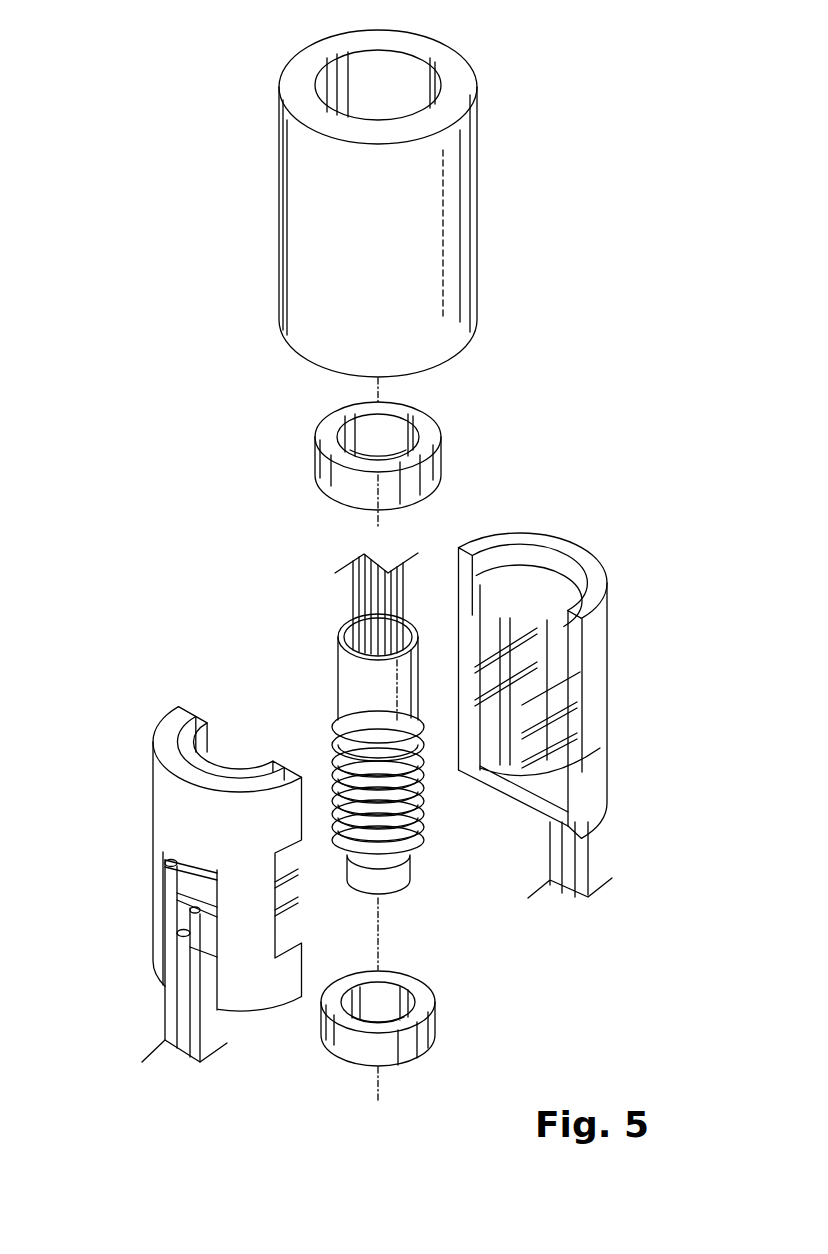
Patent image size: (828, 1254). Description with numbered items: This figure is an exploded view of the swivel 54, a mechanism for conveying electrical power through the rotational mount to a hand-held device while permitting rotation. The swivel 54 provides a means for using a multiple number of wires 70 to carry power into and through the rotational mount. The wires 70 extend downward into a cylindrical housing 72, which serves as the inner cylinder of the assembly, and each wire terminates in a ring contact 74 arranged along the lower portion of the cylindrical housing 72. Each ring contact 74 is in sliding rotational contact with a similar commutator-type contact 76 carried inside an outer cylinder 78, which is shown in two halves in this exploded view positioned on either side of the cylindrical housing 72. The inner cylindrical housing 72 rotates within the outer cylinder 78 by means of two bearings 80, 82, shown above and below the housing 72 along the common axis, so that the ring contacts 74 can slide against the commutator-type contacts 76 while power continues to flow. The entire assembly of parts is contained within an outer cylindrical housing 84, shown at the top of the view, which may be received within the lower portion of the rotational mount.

The swivel 54 is at (582, 508).
The wires 70 is at (352, 604).
The cylindrical housing 72 is at (340, 690).
The ring contact 74 is at (412, 847).
The commutator-type contact 76 is at (585, 750).
The outer cylinder 78 is at (168, 815).
The bearing 80 is at (316, 465).
The bearing 82 is at (436, 1023).
The outer cylindrical housing 84 is at (463, 238).